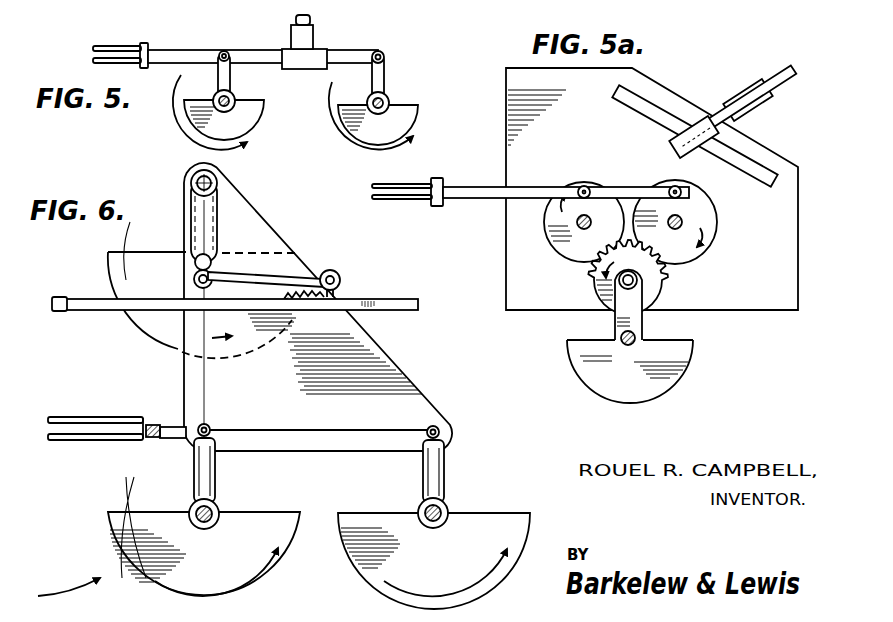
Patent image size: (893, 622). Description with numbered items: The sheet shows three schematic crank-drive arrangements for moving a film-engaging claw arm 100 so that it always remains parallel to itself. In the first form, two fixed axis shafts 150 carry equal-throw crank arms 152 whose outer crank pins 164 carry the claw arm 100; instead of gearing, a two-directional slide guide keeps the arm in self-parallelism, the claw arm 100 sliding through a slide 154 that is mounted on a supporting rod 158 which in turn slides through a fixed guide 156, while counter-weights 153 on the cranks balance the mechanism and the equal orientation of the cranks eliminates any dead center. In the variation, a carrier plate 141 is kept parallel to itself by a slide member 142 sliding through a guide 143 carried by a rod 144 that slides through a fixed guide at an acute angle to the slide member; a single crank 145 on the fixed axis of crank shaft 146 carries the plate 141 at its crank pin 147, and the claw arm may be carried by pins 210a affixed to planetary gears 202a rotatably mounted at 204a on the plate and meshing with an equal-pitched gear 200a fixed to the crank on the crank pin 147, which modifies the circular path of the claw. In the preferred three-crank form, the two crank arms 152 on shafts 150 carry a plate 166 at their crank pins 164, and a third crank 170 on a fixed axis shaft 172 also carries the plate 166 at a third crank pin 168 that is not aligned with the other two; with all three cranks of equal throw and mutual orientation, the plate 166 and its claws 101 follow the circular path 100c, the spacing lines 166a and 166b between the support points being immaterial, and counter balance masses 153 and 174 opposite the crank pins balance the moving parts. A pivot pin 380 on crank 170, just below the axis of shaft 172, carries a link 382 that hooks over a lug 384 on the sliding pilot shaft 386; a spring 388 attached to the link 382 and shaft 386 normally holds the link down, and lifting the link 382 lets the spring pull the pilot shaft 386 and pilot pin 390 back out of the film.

In FIG. 5, the claw arm 100 is at (183, 43).
In FIG. 5a, the claw arm 100 is at (468, 199).
In FIG. 6, the claw arm 100 is at (176, 437).
In FIG. 6, the circular movement path 100c is at (77, 592).
In FIG. 6, the claws 101 is at (128, 440).
In FIG. 5a, the carrier plate 141 is at (780, 206).
In FIG. 5a, the slide member 142 is at (765, 150).
In FIG. 5a, the guide 143 is at (702, 118).
In FIG. 5a, the rod 144 is at (786, 82).
In FIG. 5a, the crank 145 is at (647, 331).
In FIG. 5a, the crank shaft 146 is at (672, 362).
In FIG. 5a, the crank pin 147 is at (636, 286).
In FIG. 5, the fixed axis shafts 150 is at (221, 112).
In FIG. 6, the fixed axis shafts 150 is at (201, 529).
In FIG. 5, the crank arms 152 is at (230, 78).
In FIG. 6, the crank arms 152 is at (216, 478).
In FIG. 6, the counter-weights 153 is at (255, 570).
In FIG. 5, the slide 154 is at (317, 70).
In FIG. 5, the fixed guide 156 is at (289, 33).
In FIG. 5, the supporting rod 158 is at (305, 17).
In FIG. 5, the crank pins 164 is at (244, 37).
In FIG. 6, the crank pins 164 is at (209, 430).
In FIG. 6, the plate 166 is at (318, 307).
In FIG. 6, the spacing line 166a is at (208, 385).
In FIG. 6, the spacing line 166b is at (352, 428).
In FIG. 6, the third crank pin 168 is at (190, 179).
In FIG. 6, the third crank 170 is at (212, 224).
In FIG. 6, the fixed axis shaft 172 is at (196, 264).
In FIG. 6, the counter balance mass 174 is at (147, 340).
In FIG. 5a, the gear 200a is at (590, 300).
In FIG. 5a, the planetary gears 202a is at (567, 182).
In FIG. 5a, the planetary gear mountings 204a is at (683, 222).
In FIG. 5a, the pins 210a is at (590, 189).
In FIG. 6, the pivot pin 380 is at (222, 276).
In FIG. 6, the link 382 is at (318, 270).
In FIG. 6, the lug 384 is at (330, 299).
In FIG. 6, the sliding pilot shaft 386 is at (378, 311).
In FIG. 6, the spring 388 is at (303, 313).
In FIG. 6, the pilot pin 390 is at (60, 311).